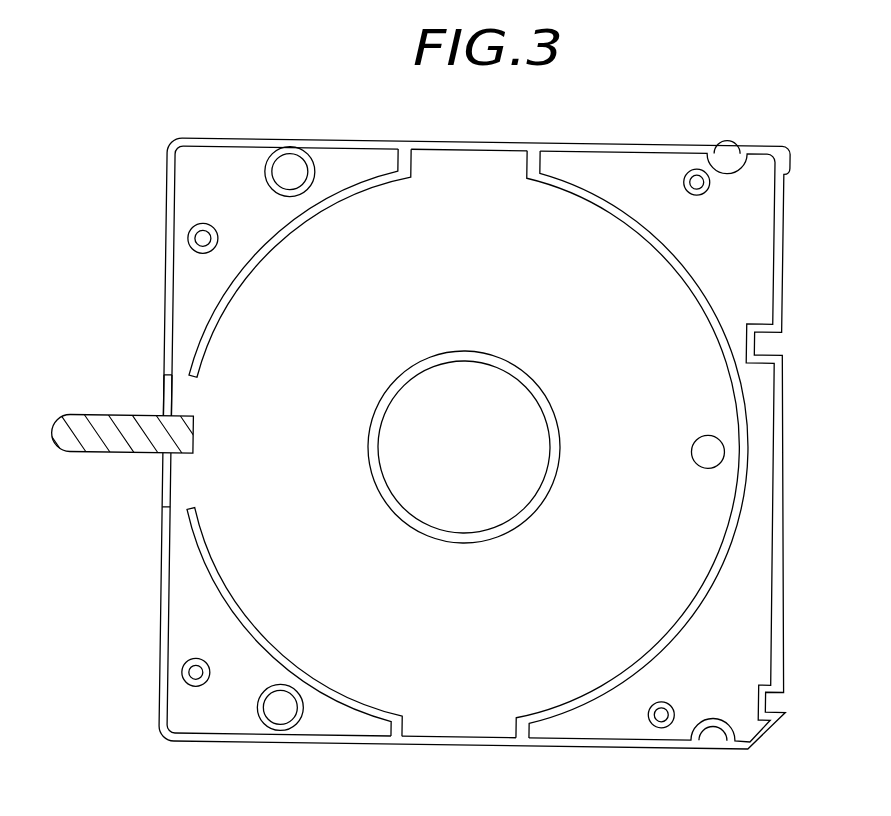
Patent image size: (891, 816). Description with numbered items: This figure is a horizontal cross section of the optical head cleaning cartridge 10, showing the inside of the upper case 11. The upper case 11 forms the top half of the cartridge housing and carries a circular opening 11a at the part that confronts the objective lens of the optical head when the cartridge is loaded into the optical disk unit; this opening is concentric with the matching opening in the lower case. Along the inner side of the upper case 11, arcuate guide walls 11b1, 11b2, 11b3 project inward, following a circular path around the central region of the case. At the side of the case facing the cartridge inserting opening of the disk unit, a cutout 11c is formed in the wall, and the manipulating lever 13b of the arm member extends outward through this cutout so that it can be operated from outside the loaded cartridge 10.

The optical head cleaning cartridge 10 is at (871, 133).
The upper case 11 is at (751, 279).
The circular opening 11a is at (708, 447).
The arcuate guide wall 11b1 is at (201, 324).
The arcuate guide wall 11b2 is at (198, 559).
The arcuate guide wall 11b3 is at (687, 259).
The cutout 11c is at (166, 391).
The manipulating lever 13b is at (72, 458).